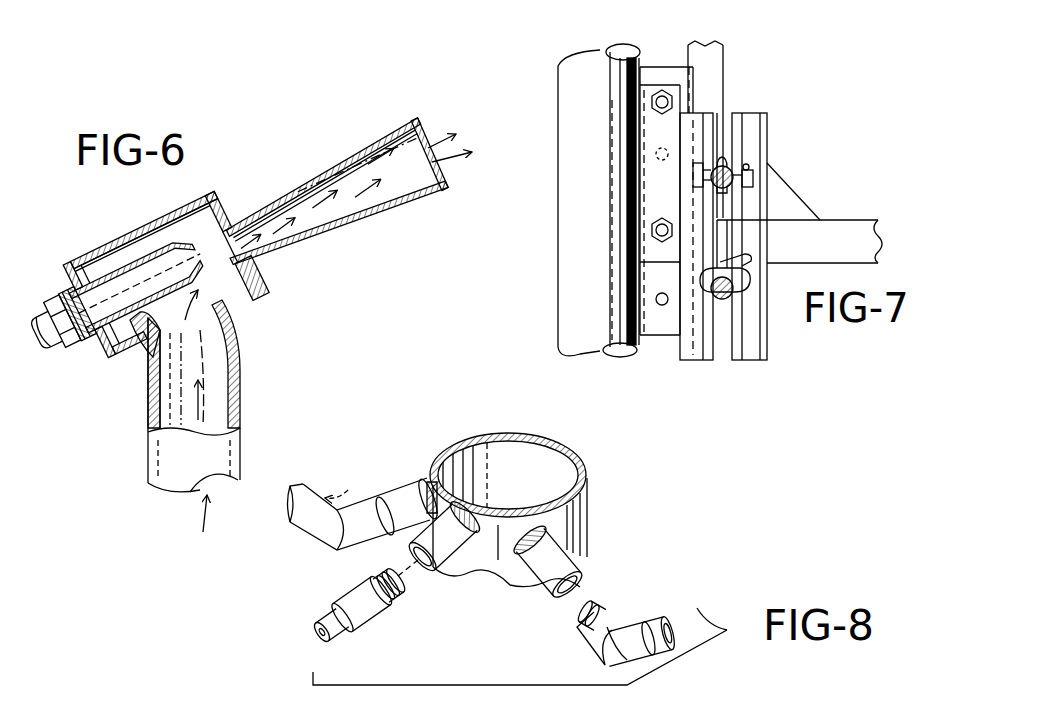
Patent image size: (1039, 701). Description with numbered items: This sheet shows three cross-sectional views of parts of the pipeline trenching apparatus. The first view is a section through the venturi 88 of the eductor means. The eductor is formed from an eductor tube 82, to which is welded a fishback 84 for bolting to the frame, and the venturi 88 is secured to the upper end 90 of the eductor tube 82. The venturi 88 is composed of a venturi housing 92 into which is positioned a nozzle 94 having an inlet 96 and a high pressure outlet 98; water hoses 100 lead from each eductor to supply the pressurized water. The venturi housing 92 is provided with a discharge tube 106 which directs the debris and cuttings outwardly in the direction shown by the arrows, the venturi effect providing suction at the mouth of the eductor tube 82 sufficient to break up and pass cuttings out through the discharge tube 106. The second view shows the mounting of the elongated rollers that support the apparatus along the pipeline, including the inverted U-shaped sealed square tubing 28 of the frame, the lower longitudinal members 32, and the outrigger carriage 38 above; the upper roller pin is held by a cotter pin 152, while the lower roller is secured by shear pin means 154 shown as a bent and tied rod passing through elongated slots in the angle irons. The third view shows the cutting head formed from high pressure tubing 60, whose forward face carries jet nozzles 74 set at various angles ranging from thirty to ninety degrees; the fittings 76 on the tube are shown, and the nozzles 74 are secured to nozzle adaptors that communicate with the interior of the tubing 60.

In FIG. 7, the inverted U-shaped sealed square tubing 28 is at (723, 87).
In FIG. 7, the lower longitudinal members 32 is at (845, 223).
In FIG. 6, the outrigger carriage 38 is at (342, 10).
In FIG. 8, the high pressure tubing 60 is at (580, 448).
In FIG. 8, the jet nozzles 74 is at (287, 520).
In FIG. 8, the tube nipple 76 is at (403, 490).
In FIG. 6, the eductor tube 82 is at (237, 372).
In FIG. 7, the eductor tube 82 is at (568, 280).
In FIG. 7, the fishback 84 is at (653, 128).
In FIG. 6, the venturi 88 is at (130, 232).
In FIG. 6, the upper end 90 is at (147, 377).
In FIG. 6, the venturi housing 92 is at (172, 214).
In FIG. 6, the nozzle 94 is at (133, 277).
In FIG. 6, the inlet 96 is at (76, 281).
In FIG. 6, the high pressure outlet 98 is at (225, 215).
In FIG. 6, the water hoses 100 is at (40, 352).
In FIG. 6, the discharge tube 106 is at (352, 144).
In FIG. 7, the cotter pin 152 is at (753, 177).
In FIG. 7, the shear pin means 154 is at (760, 277).